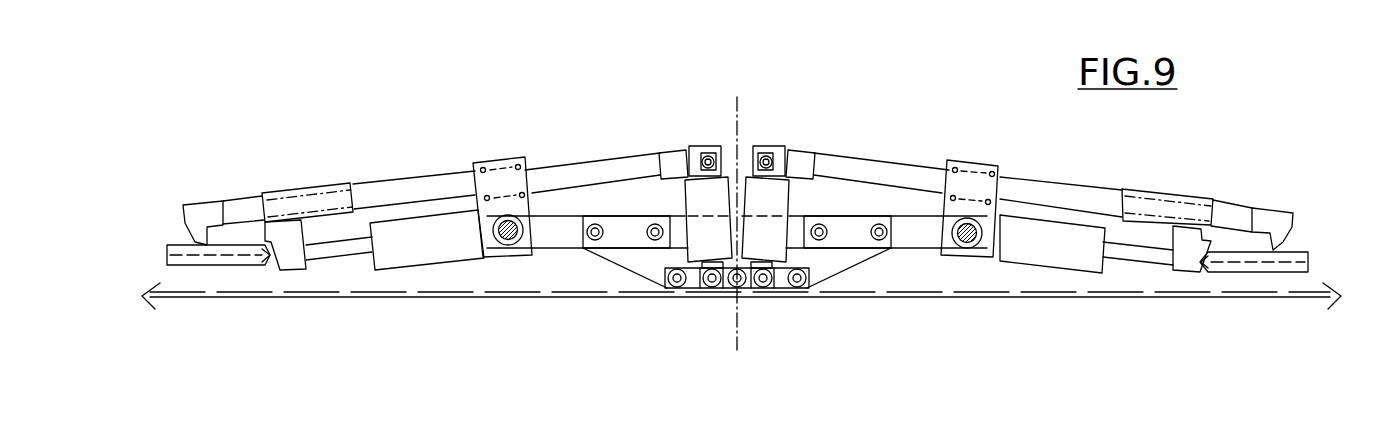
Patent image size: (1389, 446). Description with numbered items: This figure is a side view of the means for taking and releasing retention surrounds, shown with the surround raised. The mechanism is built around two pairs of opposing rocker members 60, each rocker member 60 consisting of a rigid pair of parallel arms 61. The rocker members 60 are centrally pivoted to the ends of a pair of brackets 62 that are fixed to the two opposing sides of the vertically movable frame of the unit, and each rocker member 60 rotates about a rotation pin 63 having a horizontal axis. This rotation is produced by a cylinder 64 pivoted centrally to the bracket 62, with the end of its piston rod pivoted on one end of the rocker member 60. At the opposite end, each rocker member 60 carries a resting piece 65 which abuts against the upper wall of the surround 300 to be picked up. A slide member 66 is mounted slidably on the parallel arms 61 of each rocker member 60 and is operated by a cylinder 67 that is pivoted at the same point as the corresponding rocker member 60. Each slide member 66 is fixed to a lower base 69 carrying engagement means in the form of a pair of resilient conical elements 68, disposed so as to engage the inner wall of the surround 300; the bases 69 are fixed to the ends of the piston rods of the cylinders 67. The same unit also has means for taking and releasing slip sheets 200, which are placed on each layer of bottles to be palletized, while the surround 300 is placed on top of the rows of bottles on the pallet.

The rocker member 60 is at (430, 171).
The parallel arms 61 is at (623, 171).
The bracket 62 is at (843, 258).
The rotation pin 63 is at (517, 237).
The cylinder 64 is at (727, 203).
The resting piece 65 is at (196, 210).
The slide member 66 is at (302, 196).
The cylinder 67 is at (428, 246).
The resilient conical elements 68 is at (262, 268).
The lower base 69 is at (292, 270).
The slip sheet 200 is at (1289, 300).
The retention surround 300 is at (1260, 256).